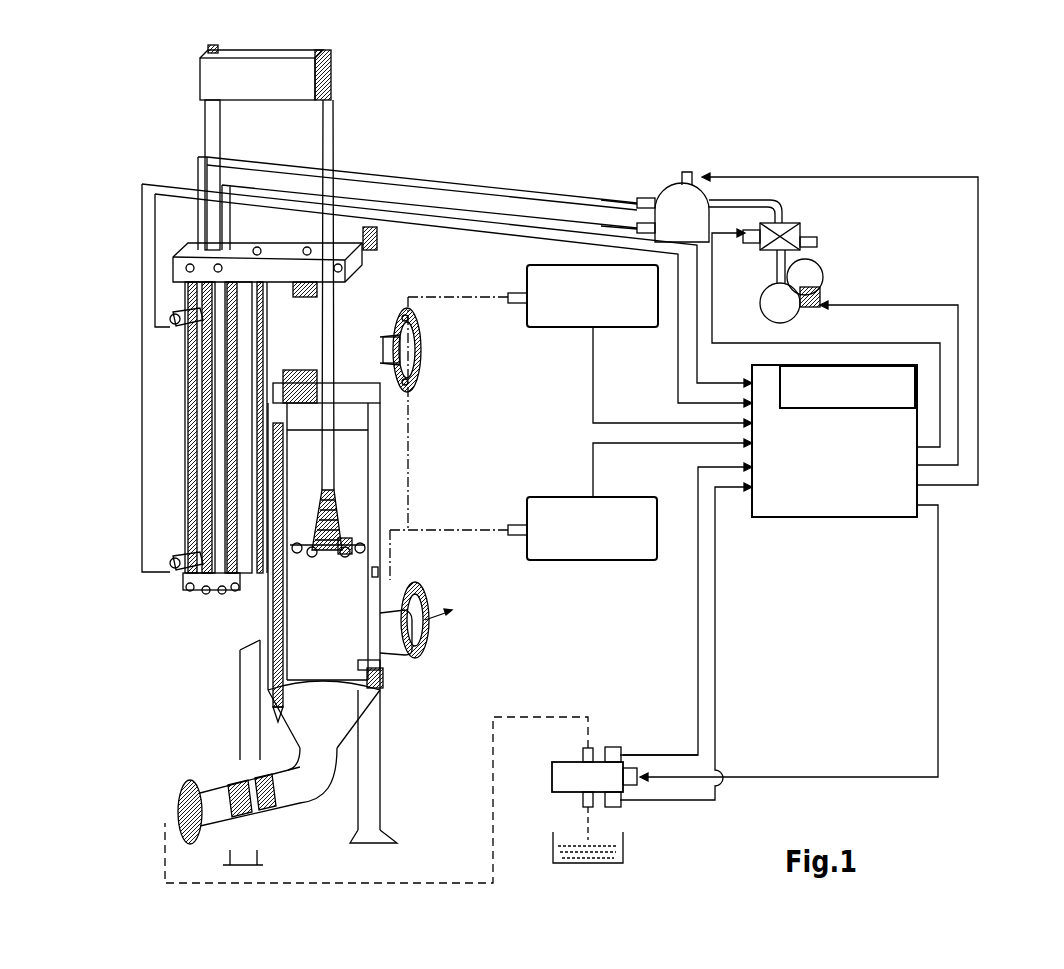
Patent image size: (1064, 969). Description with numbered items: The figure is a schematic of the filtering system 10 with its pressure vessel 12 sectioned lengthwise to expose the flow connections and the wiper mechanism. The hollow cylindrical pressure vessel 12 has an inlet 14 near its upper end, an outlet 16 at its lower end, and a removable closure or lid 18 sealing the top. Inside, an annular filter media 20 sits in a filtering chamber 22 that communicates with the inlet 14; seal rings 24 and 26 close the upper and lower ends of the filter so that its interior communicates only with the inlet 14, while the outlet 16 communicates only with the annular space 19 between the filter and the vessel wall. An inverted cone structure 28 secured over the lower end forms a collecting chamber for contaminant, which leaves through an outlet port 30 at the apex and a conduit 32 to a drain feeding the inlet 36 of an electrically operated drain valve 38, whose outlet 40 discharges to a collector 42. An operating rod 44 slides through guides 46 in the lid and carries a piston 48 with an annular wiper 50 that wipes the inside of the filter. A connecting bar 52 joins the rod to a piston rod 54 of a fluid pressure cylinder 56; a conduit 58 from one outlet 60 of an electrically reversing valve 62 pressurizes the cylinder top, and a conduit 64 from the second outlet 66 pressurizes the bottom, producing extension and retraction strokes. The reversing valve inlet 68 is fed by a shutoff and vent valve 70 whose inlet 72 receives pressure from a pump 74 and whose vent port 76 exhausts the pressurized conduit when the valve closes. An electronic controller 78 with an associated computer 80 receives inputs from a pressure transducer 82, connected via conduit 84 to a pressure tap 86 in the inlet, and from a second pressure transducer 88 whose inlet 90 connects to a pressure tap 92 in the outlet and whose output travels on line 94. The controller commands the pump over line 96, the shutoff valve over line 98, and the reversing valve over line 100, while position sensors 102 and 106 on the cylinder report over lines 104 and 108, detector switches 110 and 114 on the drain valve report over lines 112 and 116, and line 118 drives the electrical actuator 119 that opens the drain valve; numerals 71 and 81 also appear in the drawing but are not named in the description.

The system 10 is at (470, 142).
The pressure vessel 12 is at (257, 583).
The inlet 14 is at (423, 370).
The outlet 16 is at (403, 630).
The closure or lid 18 is at (230, 383).
The annular space 19 is at (380, 577).
The annular filter media 20 is at (263, 670).
The filtering chamber 22 is at (390, 387).
The seal ring 24 is at (197, 430).
The seal ring 26 is at (383, 677).
The inverted dome or cone structure 28 is at (350, 730).
The outlet port 30 is at (330, 760).
The conduit 32 is at (227, 777).
The inlet of drain valve 36 is at (585, 750).
The electrically operated drain valve 38 is at (582, 763).
The outlet of drain valve 40 is at (582, 797).
The collector 42 is at (613, 863).
The operating rod 44 is at (323, 132).
The guides or bushings 46 is at (227, 330).
The piston 48 is at (357, 547).
The annular wiper 50 is at (367, 548).
The connecting bar 52 is at (277, 57).
The piston rod 54 is at (205, 104).
The fluid pressure cylinder 56 is at (193, 474).
The fluid pressure conduit 58 is at (198, 160).
The outlet of reversing valve 60 is at (643, 200).
The electrically reversing valve 62 is at (679, 145).
The conduit 64 is at (270, 187).
The second outlet of reversing valve 66 is at (635, 226).
The inlet of reversing valve 68 is at (740, 200).
The shutoff and vent valve 70 is at (795, 222).
The valve actuator 71 is at (752, 247).
The inlet of shutoff and vent valve 72 is at (790, 255).
The fluid pressure pump 74 is at (820, 293).
The exhaust or vent port 76 is at (815, 237).
The electronic controller 78 is at (825, 530).
The computer 80 is at (828, 409).
The signal line 81 is at (605, 423).
The pressure transducer 82 is at (547, 264).
The conduit 84 is at (520, 300).
The pressure tap 86 is at (423, 353).
The second pressure transducer 88 is at (587, 562).
The inlet of second pressure transducer 90 is at (513, 525).
The pressure tap 92 is at (380, 608).
The line 94 is at (593, 470).
The line 96 is at (903, 304).
The line 98 is at (760, 343).
The line 100 is at (902, 178).
The position sensor 102 is at (187, 307).
The line 104 is at (155, 242).
The second position sensor 106 is at (173, 565).
The line 108 is at (142, 548).
The first position detector switch 110 is at (612, 747).
The line 112 is at (657, 752).
The second detector switch 114 is at (615, 807).
The line 116 is at (716, 660).
The line 118 is at (940, 700).
The electrical actuator 119 is at (632, 787).